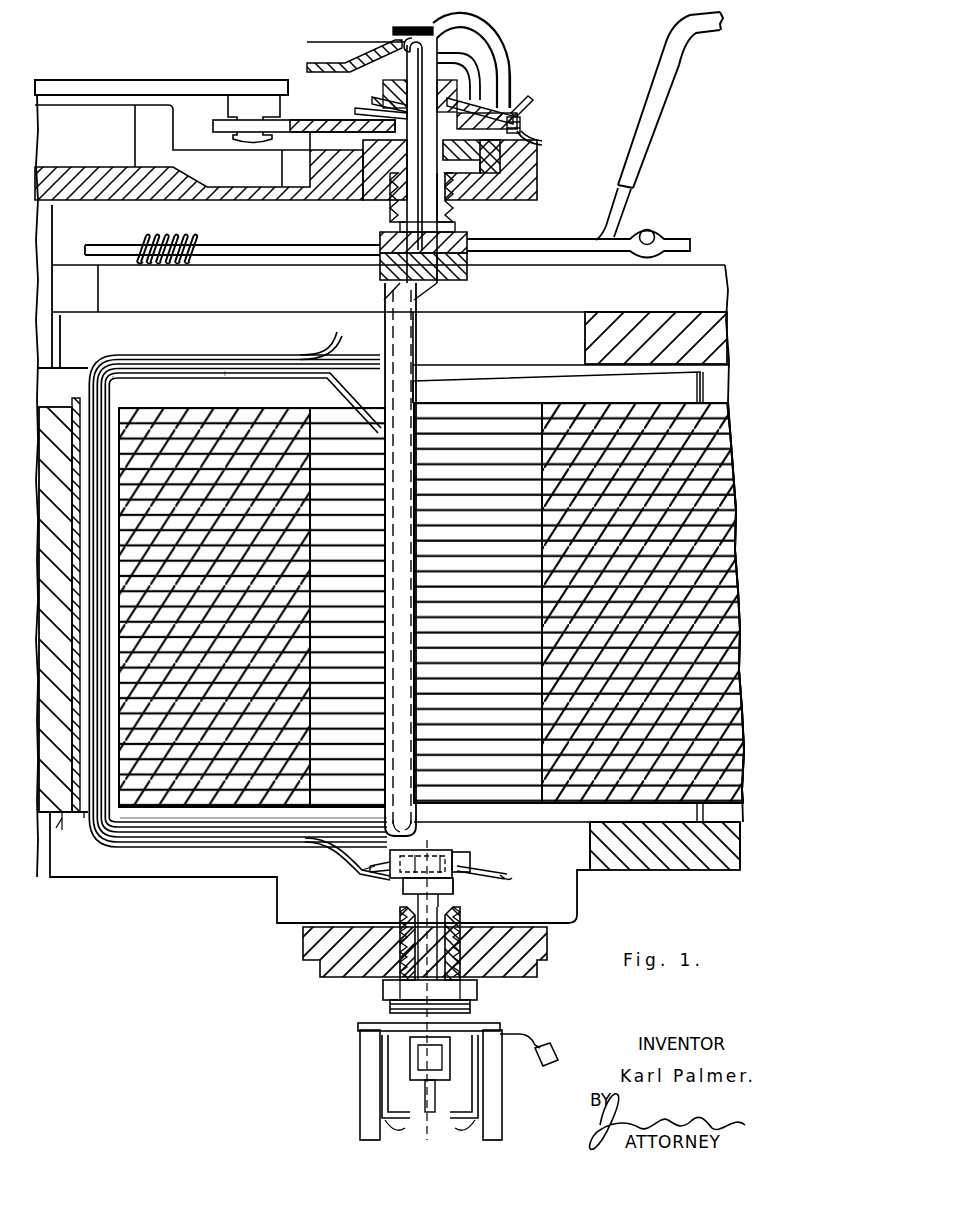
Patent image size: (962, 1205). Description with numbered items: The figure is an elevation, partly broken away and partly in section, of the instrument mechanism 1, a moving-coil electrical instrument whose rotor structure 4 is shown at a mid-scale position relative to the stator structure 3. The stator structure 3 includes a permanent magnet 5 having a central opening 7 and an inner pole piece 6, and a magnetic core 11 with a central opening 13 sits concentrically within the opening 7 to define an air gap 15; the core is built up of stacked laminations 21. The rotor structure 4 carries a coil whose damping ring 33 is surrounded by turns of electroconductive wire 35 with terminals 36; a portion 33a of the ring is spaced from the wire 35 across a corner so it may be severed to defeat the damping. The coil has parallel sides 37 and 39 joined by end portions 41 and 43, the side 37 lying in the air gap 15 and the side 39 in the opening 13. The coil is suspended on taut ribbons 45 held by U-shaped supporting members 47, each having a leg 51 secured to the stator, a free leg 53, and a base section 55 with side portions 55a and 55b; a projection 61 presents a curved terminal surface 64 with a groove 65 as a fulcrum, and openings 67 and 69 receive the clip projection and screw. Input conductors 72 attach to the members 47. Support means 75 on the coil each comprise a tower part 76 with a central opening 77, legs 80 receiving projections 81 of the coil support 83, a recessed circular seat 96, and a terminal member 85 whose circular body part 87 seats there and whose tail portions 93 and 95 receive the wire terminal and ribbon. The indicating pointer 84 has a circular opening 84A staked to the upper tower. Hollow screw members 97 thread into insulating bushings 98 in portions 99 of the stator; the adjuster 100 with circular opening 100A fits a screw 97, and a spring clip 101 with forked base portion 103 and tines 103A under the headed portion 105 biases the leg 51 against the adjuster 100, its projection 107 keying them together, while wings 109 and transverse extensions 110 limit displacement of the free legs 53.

The instrument mechanism 1 is at (528, 300).
The stator structure 3 is at (547, 400).
The rotor structure 4 is at (140, 356).
The permanent magnet 5 is at (60, 410).
The inner pole piece 6 is at (78, 398).
The central opening 7 is at (61, 828).
The magnetic core 11 is at (195, 412).
The central opening 13 is at (498, 412).
The air gap 15 is at (77, 831).
The laminations 21 is at (600, 795).
The damping ring 33 is at (258, 376).
The portion of damping ring 33a is at (355, 376).
The electroconductive wire 35 is at (226, 358).
The terminals 36 is at (330, 344).
The side of coil 37 is at (88, 792).
The side of coil 39 is at (417, 816).
The end portion of coil 41 is at (158, 360).
The end portion of coil 43 is at (233, 845).
The ribbons 45 is at (450, 210).
The supporting members 47 is at (511, 66).
The leg of supporting member 51 is at (268, 137).
The leg of supporting member 53 is at (318, 63).
The base section 55 is at (494, 35).
The side portion of base section 55a is at (360, 1128).
The side portion of base section 55b is at (502, 1130).
The projection 61 is at (410, 160).
The curved terminal surface 64 is at (431, 35).
The groove 65 is at (431, 1106).
The small opening 67 is at (522, 120).
The larger opening 69 is at (480, 105).
The input conductors 72 is at (554, 1048).
The support means 75 is at (450, 236).
The tower part 76 is at (465, 272).
The central opening 77 is at (400, 226).
The leg of tower 80 is at (422, 855).
The projections 81 is at (465, 853).
The coil support 83 is at (416, 337).
The indicating pointer 84 is at (651, 104).
The circular opening 84A is at (380, 243).
The terminal member 85 is at (490, 868).
The circular body part 87 is at (380, 860).
The tail portion 93 is at (365, 878).
The tail portion 95 is at (510, 877).
The recessed circular seat 96 is at (383, 272).
The hollow screw members 97 is at (385, 210).
The insulating bushings 98 is at (470, 930).
The portions of stator structure 99 is at (540, 179).
The adjuster 100 is at (303, 134).
The circular opening 100A is at (362, 110).
The spring clip 101 is at (533, 96).
The forked base portion 103 is at (505, 108).
The tines 103A is at (380, 100).
The headed portion 105 is at (447, 86).
The projection 107 is at (535, 142).
The wings 109 is at (500, 56).
The transverse extensions 110 is at (393, 30).